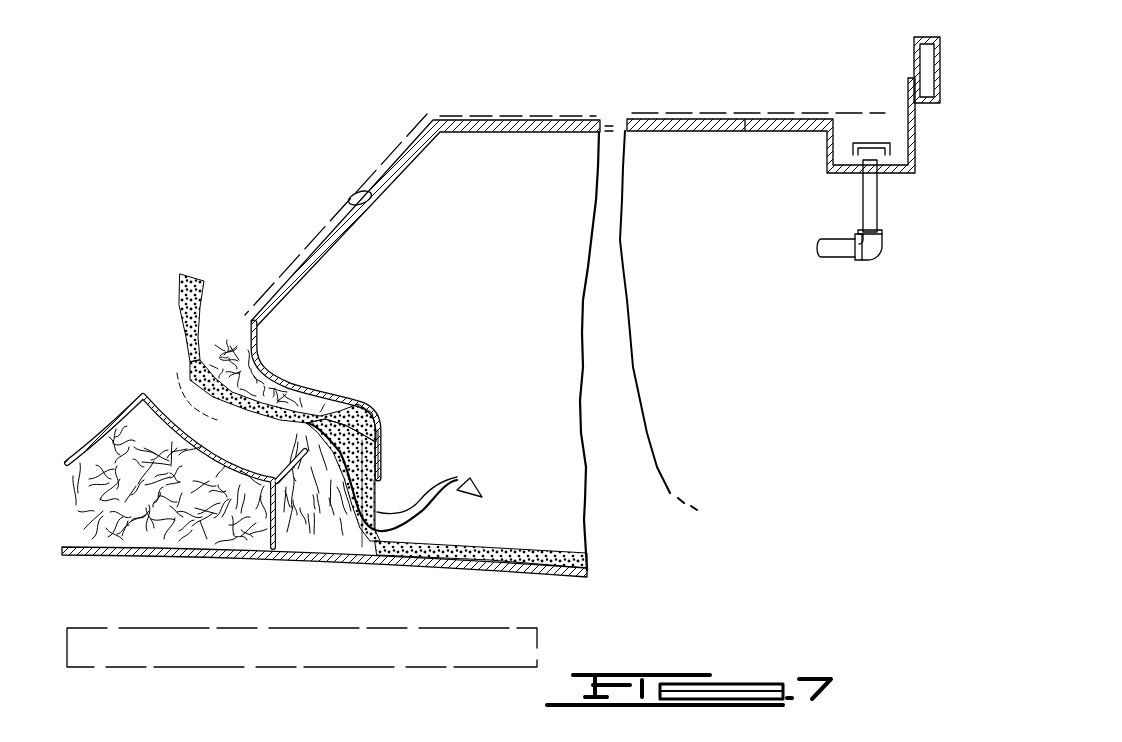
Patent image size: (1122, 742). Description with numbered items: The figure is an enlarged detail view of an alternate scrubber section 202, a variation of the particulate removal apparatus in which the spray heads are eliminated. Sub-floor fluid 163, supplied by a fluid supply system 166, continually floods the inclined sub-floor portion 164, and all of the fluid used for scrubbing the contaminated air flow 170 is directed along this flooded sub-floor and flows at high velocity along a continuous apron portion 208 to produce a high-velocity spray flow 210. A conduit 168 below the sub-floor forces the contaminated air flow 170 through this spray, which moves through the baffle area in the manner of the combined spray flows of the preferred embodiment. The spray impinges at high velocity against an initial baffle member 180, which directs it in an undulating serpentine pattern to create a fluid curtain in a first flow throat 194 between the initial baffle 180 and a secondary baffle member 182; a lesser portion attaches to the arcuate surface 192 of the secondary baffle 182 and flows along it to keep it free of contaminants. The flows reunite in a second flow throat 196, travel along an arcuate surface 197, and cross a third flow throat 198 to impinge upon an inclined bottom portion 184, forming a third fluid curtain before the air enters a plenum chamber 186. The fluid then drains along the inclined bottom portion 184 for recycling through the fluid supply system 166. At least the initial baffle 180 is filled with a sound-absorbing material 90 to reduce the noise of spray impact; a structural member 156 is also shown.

The sound-absorbing material 90 is at (207, 530).
The upper rail 156 is at (885, 123).
The sub-floor fluid 163 is at (413, 145).
The sub-floor portion 164 is at (747, 117).
The fluid supply system 166 is at (829, 264).
The conduit 168 is at (278, 168).
The contaminated air flow 170 is at (180, 290).
The initial baffle member 180 is at (117, 437).
The secondary baffle member 182 is at (283, 387).
The inclined bottom portion 184 is at (493, 557).
The plenum chamber 186 is at (755, 342).
The arcuate surface 192 is at (263, 357).
The first flow throat 194 is at (225, 352).
The second flow throat 196 is at (337, 437).
The arcuate surface 197 is at (364, 415).
The third flow throat 198 is at (380, 513).
The alternate scrubber section 202 is at (336, 148).
The continuous apron portion 208 is at (370, 200).
The high-velocity spray flow 210 is at (185, 375).